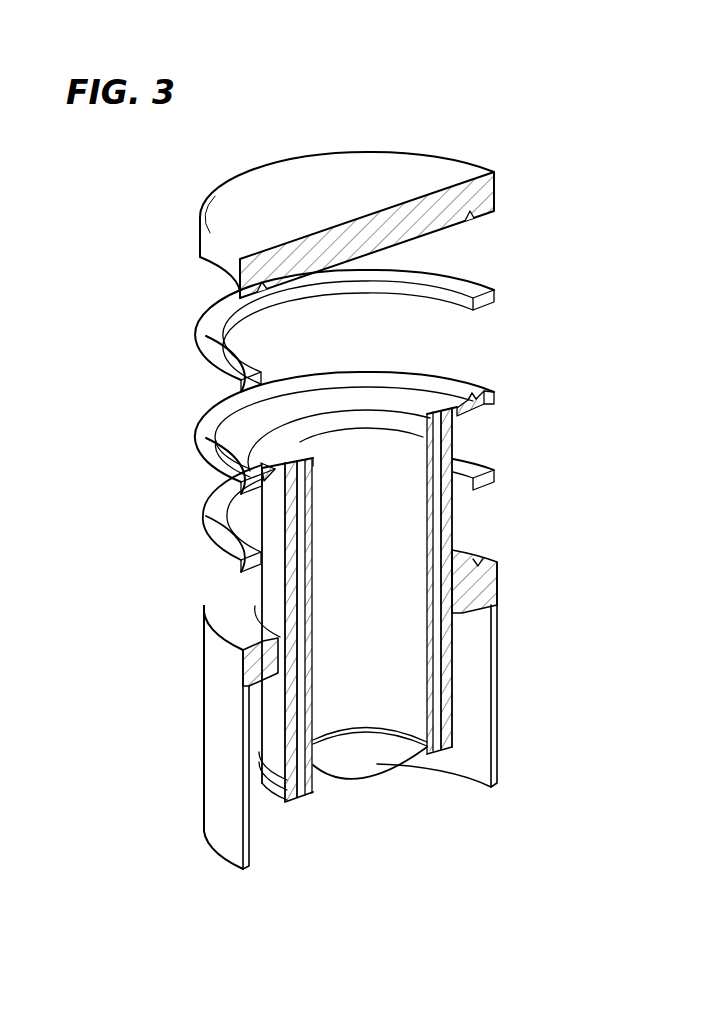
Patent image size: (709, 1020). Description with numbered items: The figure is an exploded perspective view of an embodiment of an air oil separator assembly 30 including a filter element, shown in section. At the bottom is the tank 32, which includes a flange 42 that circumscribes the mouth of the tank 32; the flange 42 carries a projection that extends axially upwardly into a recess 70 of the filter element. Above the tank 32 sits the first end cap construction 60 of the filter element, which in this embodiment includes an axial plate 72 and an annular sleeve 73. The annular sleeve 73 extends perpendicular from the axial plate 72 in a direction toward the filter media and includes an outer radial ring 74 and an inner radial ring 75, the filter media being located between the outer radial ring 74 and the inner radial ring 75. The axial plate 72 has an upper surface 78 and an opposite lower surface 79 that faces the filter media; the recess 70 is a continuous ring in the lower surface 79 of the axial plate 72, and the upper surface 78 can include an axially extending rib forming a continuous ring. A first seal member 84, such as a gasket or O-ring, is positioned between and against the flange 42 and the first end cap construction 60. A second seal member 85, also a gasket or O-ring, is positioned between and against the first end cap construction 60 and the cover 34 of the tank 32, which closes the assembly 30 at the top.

The air oil separator assembly 30 is at (554, 169).
The tank 32 is at (500, 688).
The cover 34 is at (327, 170).
The flange 42 is at (481, 564).
The first end cap construction 60 is at (485, 395).
The recess 70 is at (474, 408).
The axial plate 72 is at (224, 418).
The annular sleeve 73 is at (265, 478).
The outer radial ring 74 is at (271, 485).
The inner radial ring 75 is at (313, 463).
The upper surface 78 is at (465, 383).
The lower surface 79 is at (486, 397).
The first seal member 84 is at (485, 473).
The second seal member 85 is at (483, 291).